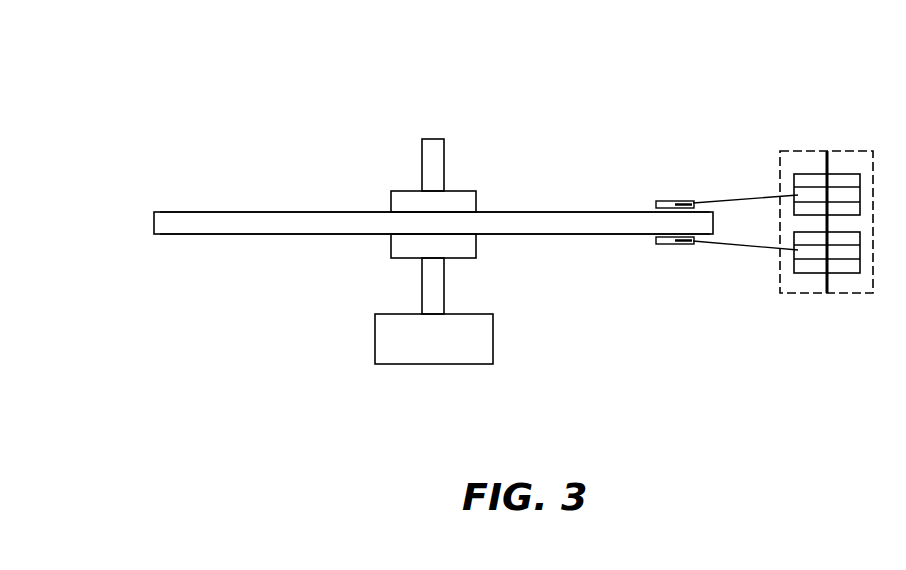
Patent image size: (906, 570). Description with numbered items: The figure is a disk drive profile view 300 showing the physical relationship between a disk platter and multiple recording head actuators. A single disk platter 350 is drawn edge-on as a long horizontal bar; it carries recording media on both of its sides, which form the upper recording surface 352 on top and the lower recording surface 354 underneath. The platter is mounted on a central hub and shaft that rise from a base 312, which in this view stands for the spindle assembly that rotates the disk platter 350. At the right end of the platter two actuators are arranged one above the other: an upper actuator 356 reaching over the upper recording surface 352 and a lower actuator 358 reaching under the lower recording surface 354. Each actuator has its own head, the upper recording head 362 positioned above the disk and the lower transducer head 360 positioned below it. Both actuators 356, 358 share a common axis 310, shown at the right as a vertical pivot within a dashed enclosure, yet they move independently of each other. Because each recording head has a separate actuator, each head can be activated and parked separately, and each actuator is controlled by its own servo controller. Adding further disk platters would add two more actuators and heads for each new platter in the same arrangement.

The disk drive profile view 300 is at (508, 62).
The common axis 310 is at (827, 152).
The pivot base 312 is at (372, 340).
The disk platter 350 is at (153, 228).
The upper recording surface 352 is at (185, 217).
The lower recording surface 354 is at (188, 238).
The upper actuator 356 is at (735, 198).
The lower actuator 358 is at (728, 247).
The lower transducer head 360 is at (672, 244).
The upper recording head 362 is at (676, 200).